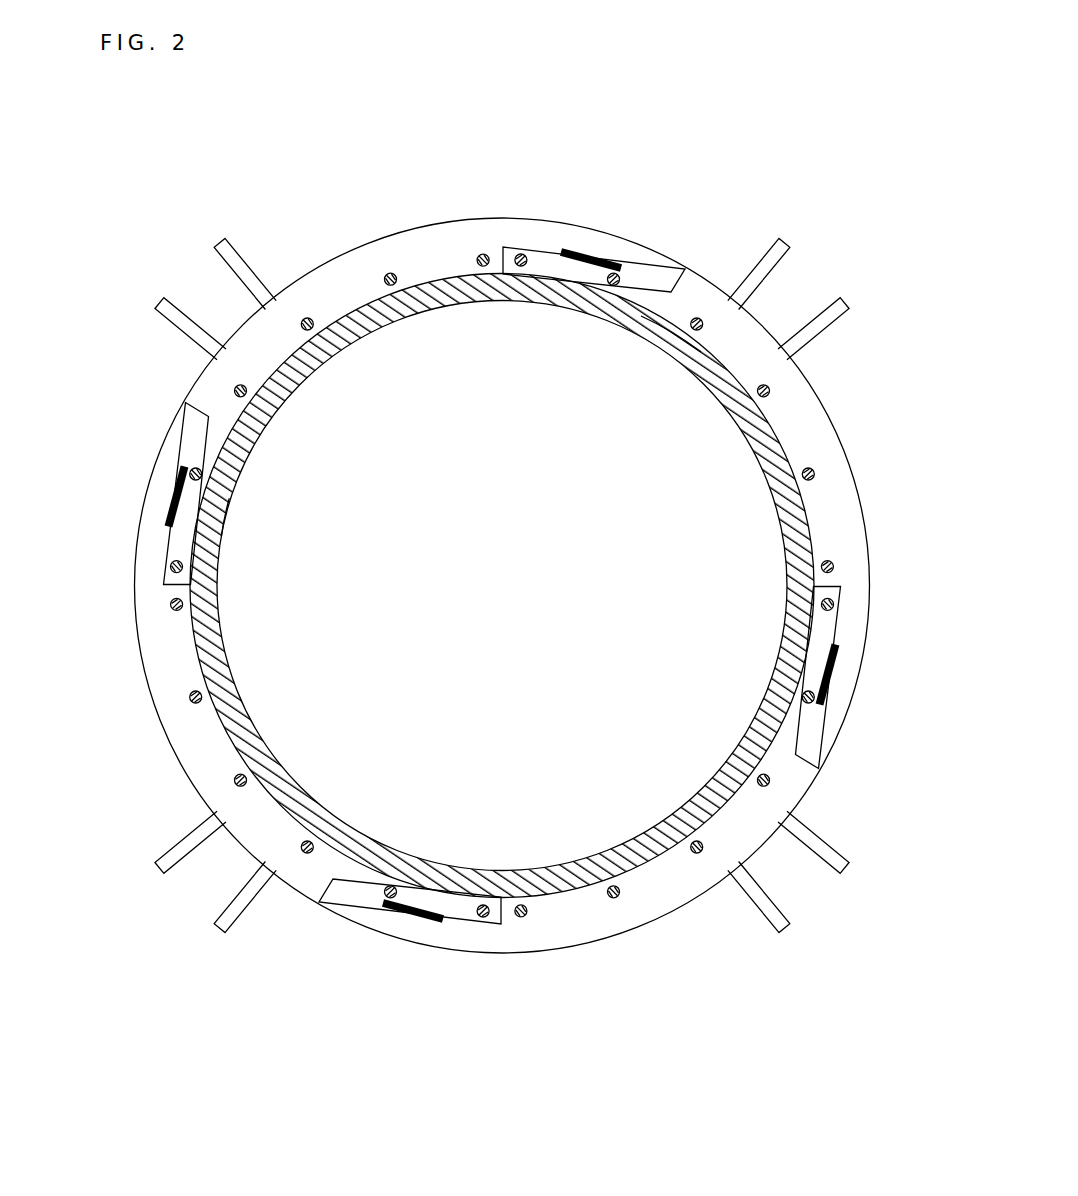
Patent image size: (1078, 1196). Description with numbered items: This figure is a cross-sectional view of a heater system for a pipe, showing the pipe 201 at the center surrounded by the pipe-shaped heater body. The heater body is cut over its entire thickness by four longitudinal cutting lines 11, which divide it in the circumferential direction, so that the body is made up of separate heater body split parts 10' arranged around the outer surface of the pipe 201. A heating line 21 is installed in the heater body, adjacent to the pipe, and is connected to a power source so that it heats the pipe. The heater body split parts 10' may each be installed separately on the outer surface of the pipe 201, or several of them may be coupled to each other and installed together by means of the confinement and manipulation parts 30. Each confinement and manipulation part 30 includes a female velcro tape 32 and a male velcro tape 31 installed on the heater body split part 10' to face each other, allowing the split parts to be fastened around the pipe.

The heater body split part 10' is at (506, 576).
The longitudinal cutting line 11 is at (652, 266).
The heating line 21 is at (328, 343).
The pipe 201 is at (650, 338).
The confinement and manipulation part 30 is at (592, 252).
The male velcro tape 31 is at (225, 515).
The female velcro tape 32 is at (172, 490).